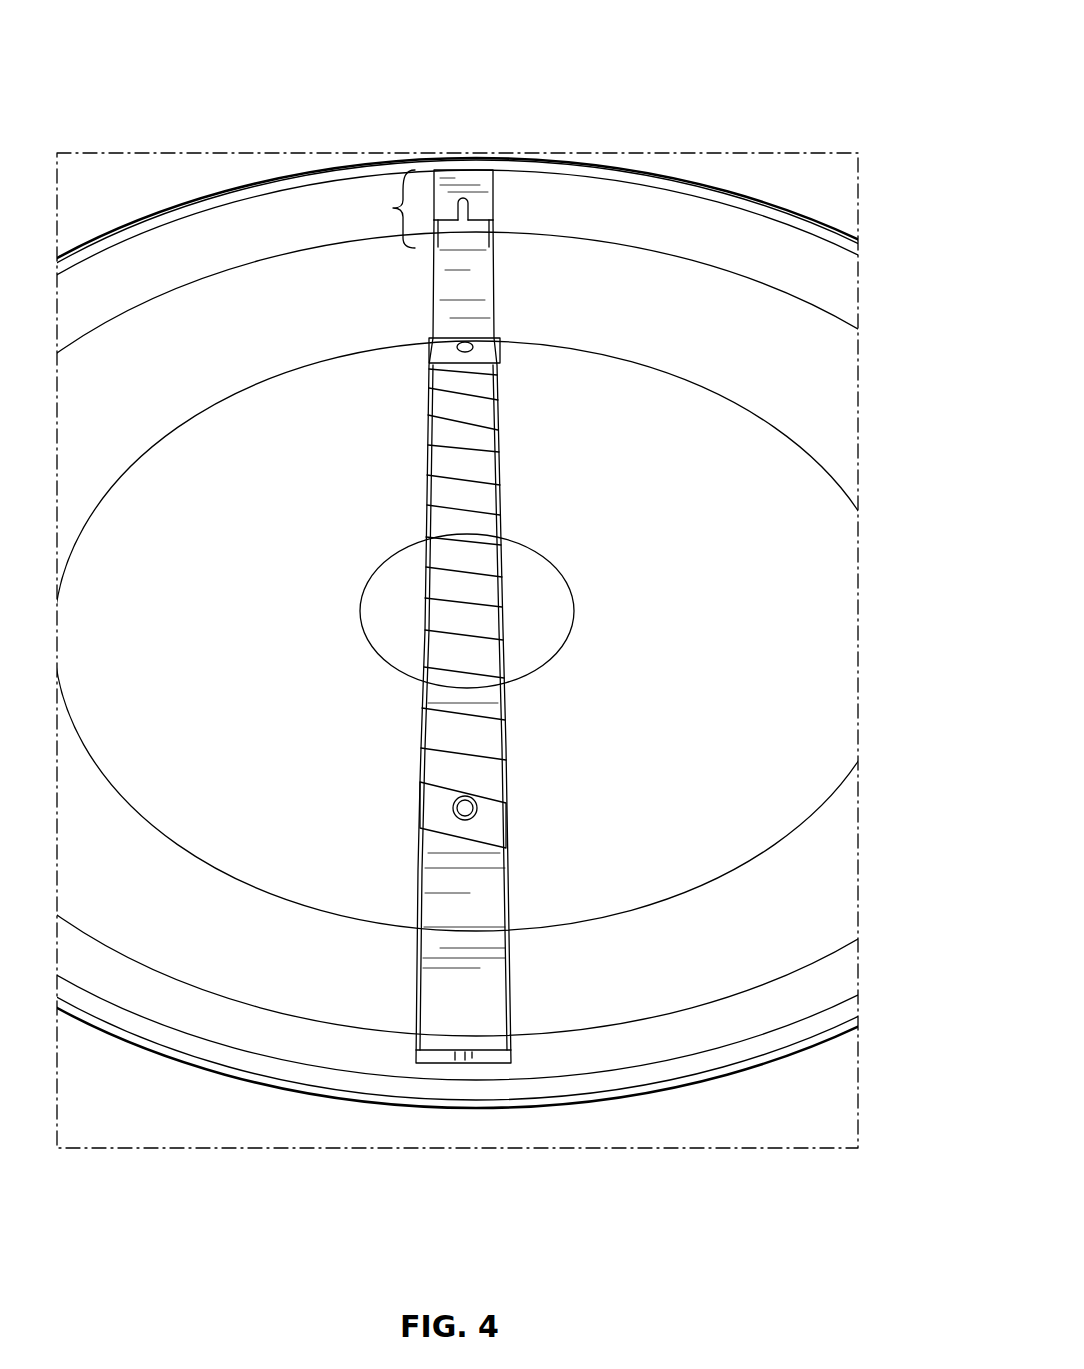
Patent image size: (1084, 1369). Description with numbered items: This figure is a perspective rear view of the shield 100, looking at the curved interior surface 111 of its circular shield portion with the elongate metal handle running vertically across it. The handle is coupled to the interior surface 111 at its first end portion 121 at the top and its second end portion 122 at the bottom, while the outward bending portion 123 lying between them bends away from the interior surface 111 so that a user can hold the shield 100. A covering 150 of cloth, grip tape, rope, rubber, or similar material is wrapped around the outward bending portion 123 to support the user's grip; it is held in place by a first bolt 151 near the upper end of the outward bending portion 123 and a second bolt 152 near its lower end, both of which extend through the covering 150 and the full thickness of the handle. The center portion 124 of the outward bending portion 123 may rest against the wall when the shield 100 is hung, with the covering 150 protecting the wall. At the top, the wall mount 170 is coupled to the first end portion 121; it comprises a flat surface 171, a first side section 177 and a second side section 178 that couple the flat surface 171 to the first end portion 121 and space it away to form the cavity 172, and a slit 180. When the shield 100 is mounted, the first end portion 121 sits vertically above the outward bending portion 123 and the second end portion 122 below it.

The shield 100 is at (829, 132).
The interior surface 111 is at (697, 835).
The first end portion 121 is at (463, 287).
The second end portion 122 is at (447, 998).
The outward bending portion 123 is at (475, 623).
The center portion 124 is at (453, 523).
The covering 150 is at (503, 708).
The first bolt 151 is at (457, 346).
The second bolt 152 is at (457, 808).
The wall mount 170 is at (393, 208).
The flat surface 171 is at (480, 186).
The cavity 172 is at (463, 233).
The first side section 177 is at (418, 232).
The second side section 178 is at (497, 230).
The slit 180 is at (467, 210).